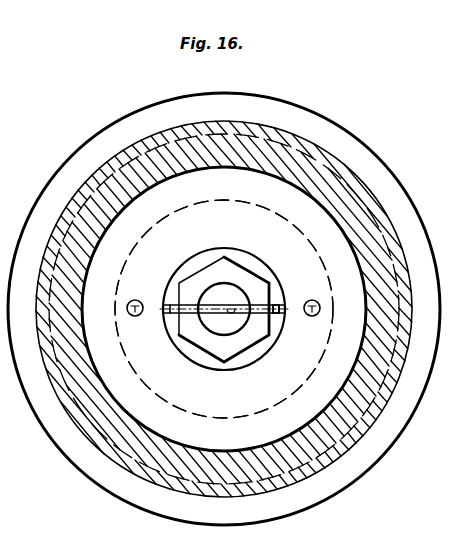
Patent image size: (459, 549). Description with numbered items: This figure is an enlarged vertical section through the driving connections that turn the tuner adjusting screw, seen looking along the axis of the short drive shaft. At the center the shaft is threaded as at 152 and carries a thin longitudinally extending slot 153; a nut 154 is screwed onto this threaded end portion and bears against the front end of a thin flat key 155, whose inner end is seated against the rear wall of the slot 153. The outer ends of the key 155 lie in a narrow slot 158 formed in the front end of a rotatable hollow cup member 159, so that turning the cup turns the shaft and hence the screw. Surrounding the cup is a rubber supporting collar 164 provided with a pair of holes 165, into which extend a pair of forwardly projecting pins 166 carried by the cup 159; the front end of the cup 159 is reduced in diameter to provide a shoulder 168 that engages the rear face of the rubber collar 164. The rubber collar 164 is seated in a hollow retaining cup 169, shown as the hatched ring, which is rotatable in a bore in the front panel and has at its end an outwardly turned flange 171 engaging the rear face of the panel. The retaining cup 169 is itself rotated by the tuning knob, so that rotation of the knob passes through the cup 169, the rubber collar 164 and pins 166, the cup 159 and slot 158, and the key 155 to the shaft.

The threaded front end 152 is at (213, 293).
The longitudinally extending slot 153 is at (233, 303).
The nut 154 is at (202, 343).
The flat key 155 is at (279, 317).
The narrow slot 158 is at (173, 301).
The hollow cup member 159 is at (115, 292).
The rubber supporting collar 164 is at (128, 396).
The holes 165 is at (128, 311).
The pins 166 is at (139, 316).
The shoulder 168 is at (273, 411).
The retaining cup 169 is at (345, 196).
The flange 171 is at (82, 158).